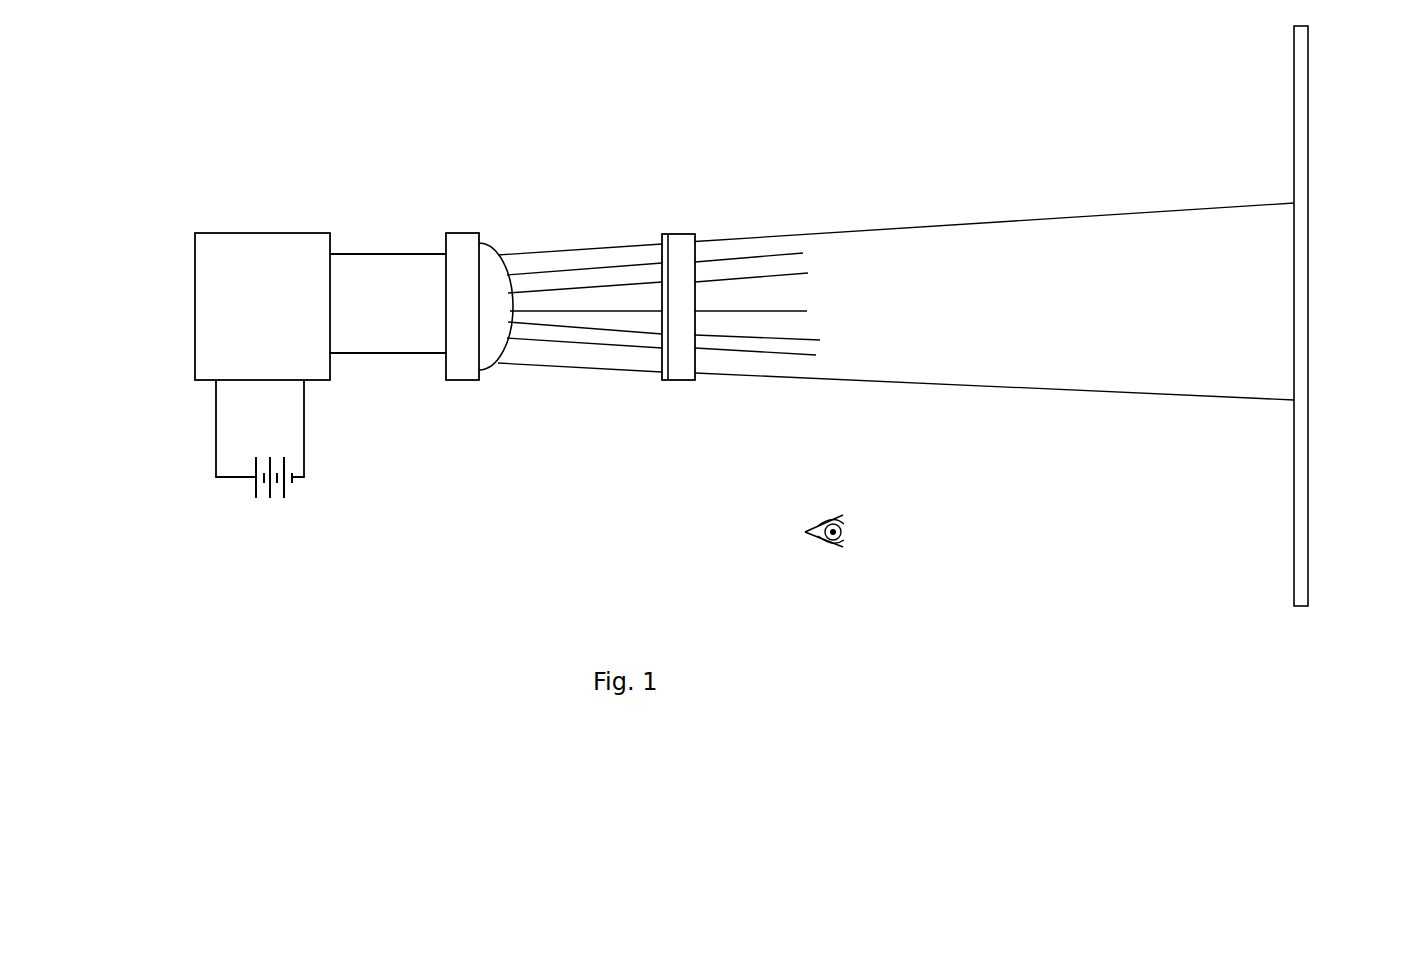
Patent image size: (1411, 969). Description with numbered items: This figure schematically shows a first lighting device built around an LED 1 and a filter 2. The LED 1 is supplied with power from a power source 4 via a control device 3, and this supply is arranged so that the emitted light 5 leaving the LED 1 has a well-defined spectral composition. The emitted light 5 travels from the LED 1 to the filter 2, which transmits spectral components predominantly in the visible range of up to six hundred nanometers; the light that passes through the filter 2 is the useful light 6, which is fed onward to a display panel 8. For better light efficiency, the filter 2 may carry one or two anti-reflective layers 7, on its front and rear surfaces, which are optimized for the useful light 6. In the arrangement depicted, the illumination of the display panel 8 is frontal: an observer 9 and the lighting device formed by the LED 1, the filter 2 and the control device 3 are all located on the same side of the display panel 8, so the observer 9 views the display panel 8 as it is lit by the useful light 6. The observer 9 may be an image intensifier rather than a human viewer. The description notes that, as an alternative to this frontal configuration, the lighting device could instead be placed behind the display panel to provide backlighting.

The LED 1 is at (460, 254).
The filter 2 is at (683, 233).
The control device 3 is at (248, 253).
The power source 4 is at (301, 504).
The emitted light 5 is at (565, 368).
The useful light 6 is at (753, 378).
The anti-reflective layers 7 is at (663, 233).
The display panel 8 is at (1300, 578).
The observer 9 is at (817, 537).